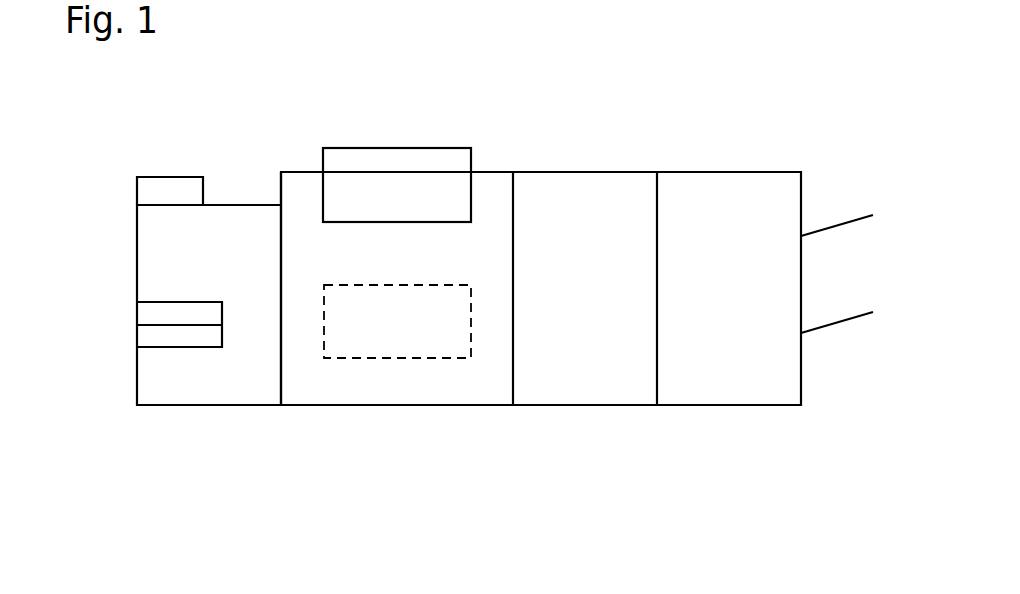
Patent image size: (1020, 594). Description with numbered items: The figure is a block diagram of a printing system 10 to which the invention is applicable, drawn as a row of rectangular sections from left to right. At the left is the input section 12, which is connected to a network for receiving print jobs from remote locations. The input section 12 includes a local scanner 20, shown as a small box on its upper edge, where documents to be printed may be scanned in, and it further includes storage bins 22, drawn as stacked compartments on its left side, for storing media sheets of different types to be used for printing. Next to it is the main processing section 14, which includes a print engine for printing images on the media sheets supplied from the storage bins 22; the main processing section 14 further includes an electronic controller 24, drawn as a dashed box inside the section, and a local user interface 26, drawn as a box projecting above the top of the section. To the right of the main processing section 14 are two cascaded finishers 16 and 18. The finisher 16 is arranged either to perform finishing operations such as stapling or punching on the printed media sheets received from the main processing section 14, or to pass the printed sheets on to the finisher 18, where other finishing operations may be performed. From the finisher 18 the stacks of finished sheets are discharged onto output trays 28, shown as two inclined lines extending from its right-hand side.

The printing system 10 is at (529, 127).
The input section 12 is at (222, 383).
The main processing section 14 is at (429, 382).
The finisher 16 is at (578, 382).
The finisher 18 is at (726, 382).
The local scanner 20 is at (178, 197).
The storage bins 22 is at (199, 312).
The electronic controller 24 is at (352, 362).
The local user interface 26 is at (387, 172).
The output trays 28 is at (837, 224).